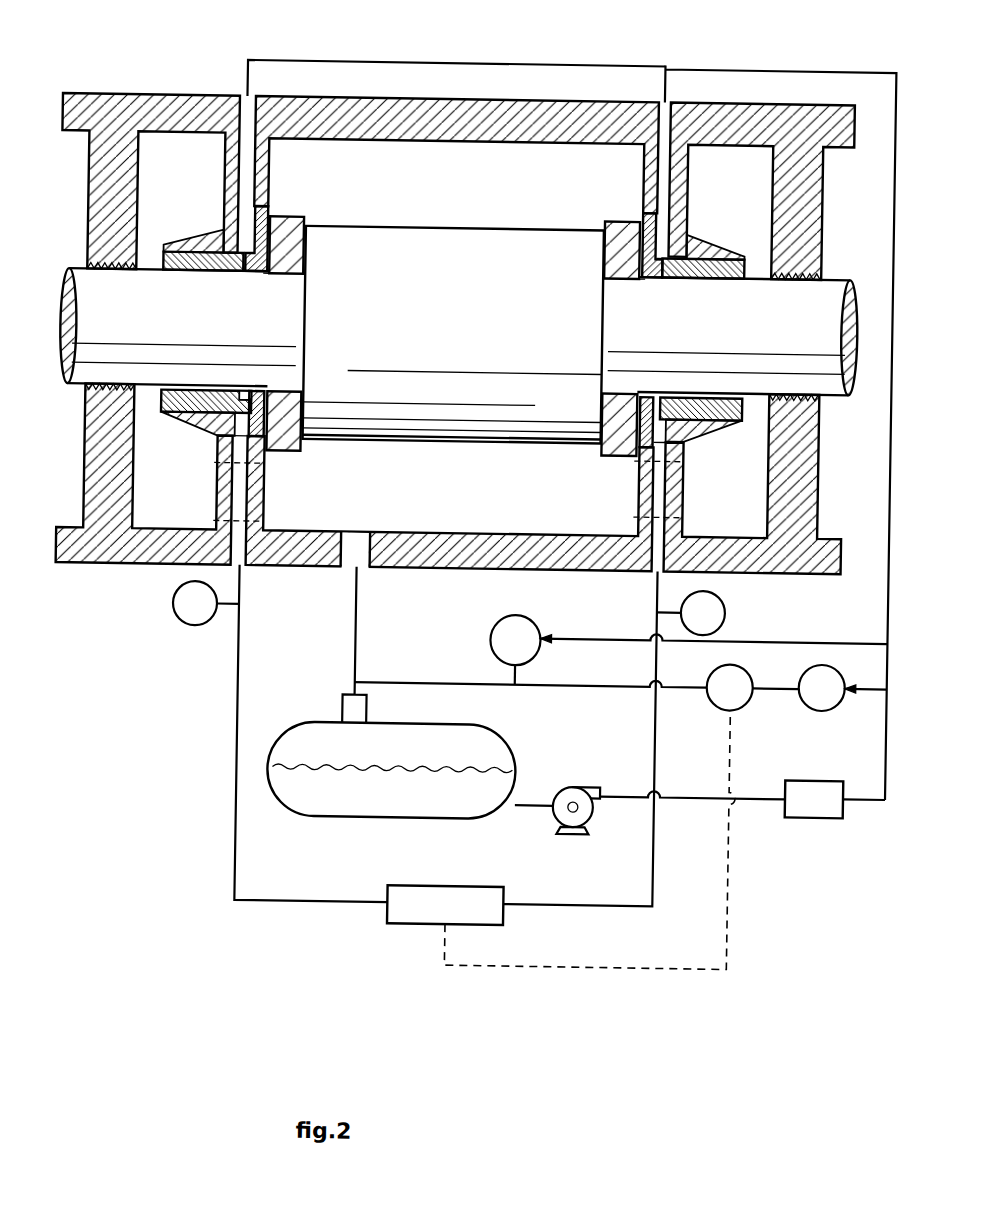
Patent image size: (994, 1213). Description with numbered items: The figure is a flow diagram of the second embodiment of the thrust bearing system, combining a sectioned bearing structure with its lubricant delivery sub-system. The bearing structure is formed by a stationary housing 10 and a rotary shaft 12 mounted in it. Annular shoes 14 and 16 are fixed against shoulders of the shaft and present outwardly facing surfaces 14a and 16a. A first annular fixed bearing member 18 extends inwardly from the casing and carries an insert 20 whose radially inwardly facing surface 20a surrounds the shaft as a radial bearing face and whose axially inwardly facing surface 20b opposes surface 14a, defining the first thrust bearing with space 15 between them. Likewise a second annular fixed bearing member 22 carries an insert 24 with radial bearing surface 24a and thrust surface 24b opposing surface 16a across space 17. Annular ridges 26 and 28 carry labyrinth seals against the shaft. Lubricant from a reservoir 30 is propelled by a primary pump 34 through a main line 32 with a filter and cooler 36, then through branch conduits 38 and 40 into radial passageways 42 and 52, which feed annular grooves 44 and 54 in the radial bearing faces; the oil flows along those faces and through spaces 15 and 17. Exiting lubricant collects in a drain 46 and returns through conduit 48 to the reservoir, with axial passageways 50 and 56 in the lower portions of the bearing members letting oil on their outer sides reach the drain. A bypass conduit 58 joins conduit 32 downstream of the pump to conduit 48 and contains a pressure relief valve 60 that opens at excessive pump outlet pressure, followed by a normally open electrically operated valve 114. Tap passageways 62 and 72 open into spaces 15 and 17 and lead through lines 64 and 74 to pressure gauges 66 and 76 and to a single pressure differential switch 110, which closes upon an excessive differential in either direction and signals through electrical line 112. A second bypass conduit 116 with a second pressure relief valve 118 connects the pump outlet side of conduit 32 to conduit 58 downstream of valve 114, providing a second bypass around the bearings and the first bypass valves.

The stationary housing 10 is at (437, 136).
The rotary shaft 12 is at (78, 366).
The annular shoe 14 is at (302, 252).
The surface of shoe 14a is at (306, 370).
The space 15 is at (270, 272).
The annular shoe 16 is at (608, 250).
The surface of shoe 16a is at (607, 396).
The space 17 is at (642, 276).
The first annular fixed bearing member 18 is at (225, 210).
The insert 20 is at (185, 386).
The radially inwardly facing surface 20a is at (205, 270).
The axially inwardly facing surface 20b is at (262, 205).
The second annular fixed bearing member 22 is at (688, 222).
The insert 24 is at (732, 406).
The radially inwardly facing surface 24a is at (730, 270).
The axially inwardly facing surface 24b is at (650, 206).
The annular ridge 26 is at (91, 469).
The annular ridge 28 is at (806, 475).
The lubricant reservoir 30 is at (510, 718).
The main line 32 is at (687, 786).
The primary pump 34 is at (590, 779).
The filter and cooler 36 is at (823, 769).
The branch conduit 38 is at (249, 74).
The branch conduit 40 is at (664, 78).
The passageway 42 is at (246, 160).
The annular groove 44 is at (250, 392).
The drain 46 is at (357, 525).
The conduit 48 is at (365, 638).
The axial passageway 50 is at (251, 511).
The radial passageway 52 is at (670, 166).
The annular groove 54 is at (667, 390).
The axial passageway 56 is at (651, 510).
The bypass conduit 58 is at (440, 678).
The pressure relief valve 60 is at (822, 699).
The tap passageway 62 is at (252, 448).
The line 64 is at (246, 700).
The pressure gauge 66 is at (186, 620).
The tap passageway 72 is at (673, 468).
The line 74 is at (667, 884).
The pressure gauge 76 is at (728, 594).
The pressure differential switch 110 is at (412, 918).
The electrical line 112 is at (580, 960).
The electrically operated valve 114 is at (725, 703).
The second bypass conduit 116 is at (805, 630).
The second pressure relief valve 118 is at (535, 610).